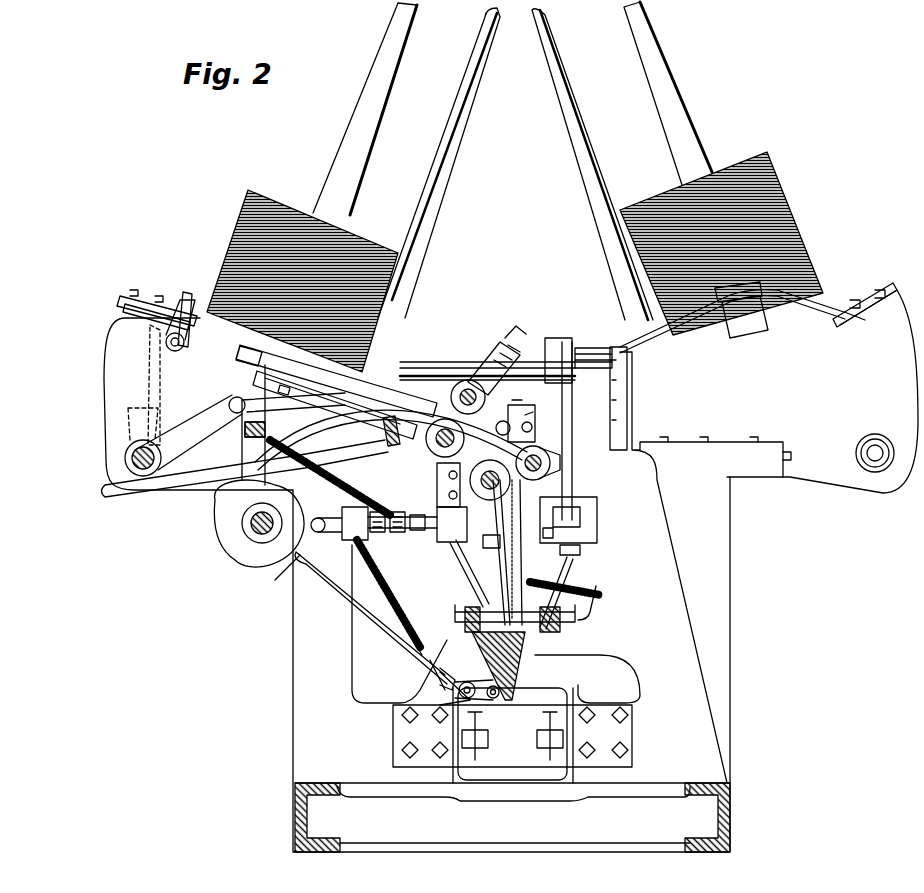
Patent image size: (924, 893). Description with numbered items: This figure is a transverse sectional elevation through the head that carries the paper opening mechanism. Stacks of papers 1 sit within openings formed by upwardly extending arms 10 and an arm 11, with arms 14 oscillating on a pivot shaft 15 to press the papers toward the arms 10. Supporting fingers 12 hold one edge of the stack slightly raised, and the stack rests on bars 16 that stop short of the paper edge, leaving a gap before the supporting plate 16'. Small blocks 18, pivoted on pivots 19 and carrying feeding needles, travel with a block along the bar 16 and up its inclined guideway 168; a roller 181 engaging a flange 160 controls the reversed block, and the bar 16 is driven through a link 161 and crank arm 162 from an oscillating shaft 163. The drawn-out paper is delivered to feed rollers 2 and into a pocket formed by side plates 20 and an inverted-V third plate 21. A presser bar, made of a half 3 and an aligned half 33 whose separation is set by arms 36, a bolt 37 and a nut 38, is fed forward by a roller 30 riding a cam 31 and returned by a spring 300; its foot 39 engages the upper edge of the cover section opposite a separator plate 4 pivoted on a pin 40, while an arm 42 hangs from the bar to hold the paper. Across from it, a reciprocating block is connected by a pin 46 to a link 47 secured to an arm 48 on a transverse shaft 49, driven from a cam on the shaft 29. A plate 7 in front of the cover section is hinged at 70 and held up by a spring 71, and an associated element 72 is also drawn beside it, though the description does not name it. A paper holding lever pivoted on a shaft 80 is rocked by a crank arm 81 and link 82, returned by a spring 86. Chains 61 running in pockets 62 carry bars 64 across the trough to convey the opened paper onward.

The stacks of papers 1 is at (243, 216).
The feed rollers 2 is at (470, 392).
The presser bar end 3 is at (333, 530).
The separator plate 4 is at (575, 512).
The plate 7 is at (525, 552).
The arm 10 is at (423, 197).
The arm 11 is at (348, 118).
The supporting fingers 12 is at (313, 383).
The arms 14 is at (185, 295).
The pivot shaft 15 is at (170, 343).
The bar 16 is at (322, 381).
The supporting plate 16' is at (184, 341).
The small blocks 18 is at (393, 441).
The pivots 19 is at (414, 453).
The side plates 20 is at (487, 583).
The third plate 21 is at (447, 660).
The shaft 29 is at (250, 518).
The roller 30 is at (300, 557).
The cam 31 is at (222, 527).
The presser bar half 33 is at (427, 528).
The arms 36 is at (400, 515).
The bolt 37 is at (390, 533).
The nut 38 is at (414, 518).
The foot 39 is at (530, 512).
The pin 40 is at (532, 427).
The arm 42 is at (483, 565).
The pin 46 is at (553, 532).
The link 47 is at (562, 397).
The arm 48 is at (557, 353).
The shaft 49 is at (523, 365).
The paper feeding chain 61 is at (458, 617).
The pockets 62 is at (420, 648).
The bars 64 is at (537, 635).
The hinge 70 is at (580, 612).
The spring 71 is at (600, 588).
The rod 72 is at (573, 560).
The shaft 80 is at (503, 697).
The crank arm 81 is at (473, 697).
The link 82 is at (340, 592).
The spring 86 is at (378, 620).
The flange 160 is at (243, 379).
The link 161 is at (243, 437).
The crank arm 162 is at (200, 423).
The shaft 163 is at (125, 452).
The inclined guideway 168 is at (333, 412).
The roller 181 is at (364, 422).
The spring 300 is at (310, 467).